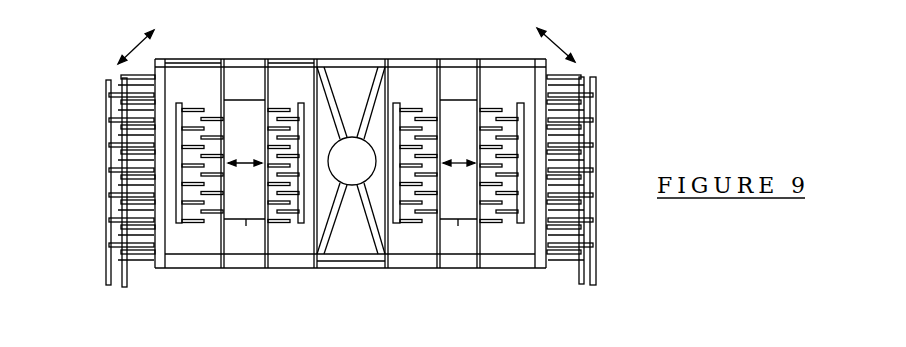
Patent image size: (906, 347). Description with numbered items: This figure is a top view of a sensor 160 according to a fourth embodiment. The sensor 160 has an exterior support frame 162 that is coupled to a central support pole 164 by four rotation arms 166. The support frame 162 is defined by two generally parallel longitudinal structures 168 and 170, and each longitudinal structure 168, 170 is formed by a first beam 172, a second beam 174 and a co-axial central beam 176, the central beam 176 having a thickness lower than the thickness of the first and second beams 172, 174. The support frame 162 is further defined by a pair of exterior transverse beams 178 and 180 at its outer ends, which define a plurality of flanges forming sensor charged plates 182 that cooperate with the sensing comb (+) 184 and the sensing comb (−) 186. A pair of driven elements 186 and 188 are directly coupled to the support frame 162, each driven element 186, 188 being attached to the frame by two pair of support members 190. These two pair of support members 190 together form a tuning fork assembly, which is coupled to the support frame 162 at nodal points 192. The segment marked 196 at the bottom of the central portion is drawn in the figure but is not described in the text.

The sensor 160 is at (419, 59).
The exterior support frame 162 is at (216, 59).
The support pole 164 is at (373, 255).
The rotation arms 166 is at (335, 109).
The longitudinal structure 168 is at (283, 59).
The longitudinal structure 170 is at (177, 270).
The first beam 172 is at (166, 59).
The second beam 174 is at (508, 59).
The central beam 176 is at (357, 59).
The exterior transverse beam 178 is at (147, 72).
The exterior transverse beam 180 is at (548, 70).
The sensor charged plates 182 is at (141, 266).
The sensing comb (+) 184 is at (106, 127).
The sensing comb (−) 186 is at (121, 78).
The driven element 188 is at (458, 207).
The support members 190 is at (263, 90).
The nodal points 192 is at (222, 60).
The bottom frame segment 196 is at (331, 269).